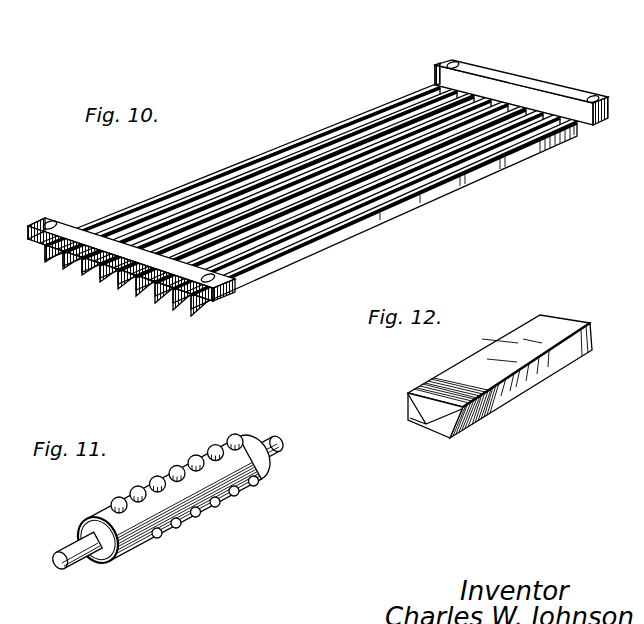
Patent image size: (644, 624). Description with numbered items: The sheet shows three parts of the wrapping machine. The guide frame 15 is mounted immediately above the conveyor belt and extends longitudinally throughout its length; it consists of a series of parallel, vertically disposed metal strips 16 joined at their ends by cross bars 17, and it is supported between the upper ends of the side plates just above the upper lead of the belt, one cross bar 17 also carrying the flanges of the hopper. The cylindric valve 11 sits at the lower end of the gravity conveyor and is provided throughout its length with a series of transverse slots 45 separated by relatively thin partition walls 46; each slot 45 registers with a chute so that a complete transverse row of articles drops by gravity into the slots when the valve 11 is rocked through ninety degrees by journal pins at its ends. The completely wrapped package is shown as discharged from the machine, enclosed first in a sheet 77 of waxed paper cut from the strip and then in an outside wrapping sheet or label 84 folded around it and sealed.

In FIG. 10, the guide frame 15 is at (318, 182).
In FIG. 10, the strips 16 is at (263, 180).
In FIG. 10, the cross bars 17 is at (62, 222).
In FIG. 11, the cylindric valve 11 is at (174, 499).
In FIG. 11, the transverse slots 45 is at (145, 492).
In FIG. 11, the partition walls 46 is at (203, 462).
In FIG. 12, the outside wrapping sheets or labels 84 is at (508, 343).
In FIG. 12, the sheets of wrapping material 77 is at (454, 433).